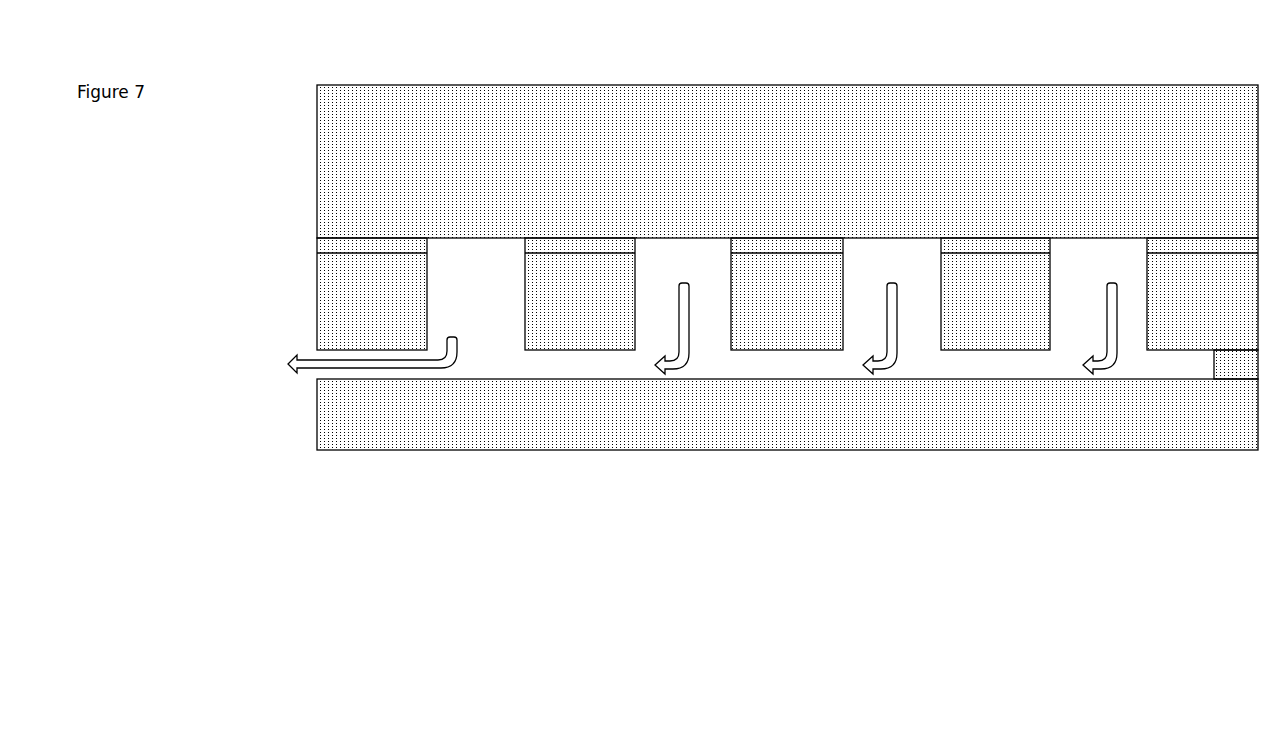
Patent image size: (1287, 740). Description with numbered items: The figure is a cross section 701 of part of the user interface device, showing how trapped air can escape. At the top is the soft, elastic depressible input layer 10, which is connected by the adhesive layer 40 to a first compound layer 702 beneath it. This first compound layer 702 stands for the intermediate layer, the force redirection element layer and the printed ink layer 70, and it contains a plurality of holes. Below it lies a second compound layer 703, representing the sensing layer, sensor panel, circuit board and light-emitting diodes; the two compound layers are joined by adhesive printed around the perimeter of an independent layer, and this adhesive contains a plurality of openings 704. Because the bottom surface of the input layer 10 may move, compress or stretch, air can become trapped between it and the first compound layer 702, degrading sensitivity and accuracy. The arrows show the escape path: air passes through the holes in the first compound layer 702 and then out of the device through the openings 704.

The depressible input layer 10 is at (748, 120).
The adhesive layer 40 is at (317, 243).
The printed ink layer 70 is at (1214, 362).
The cross section 701 is at (732, 338).
The first compound layer 702 is at (317, 298).
The second compound layer 703 is at (793, 427).
The openings 704 is at (315, 375).